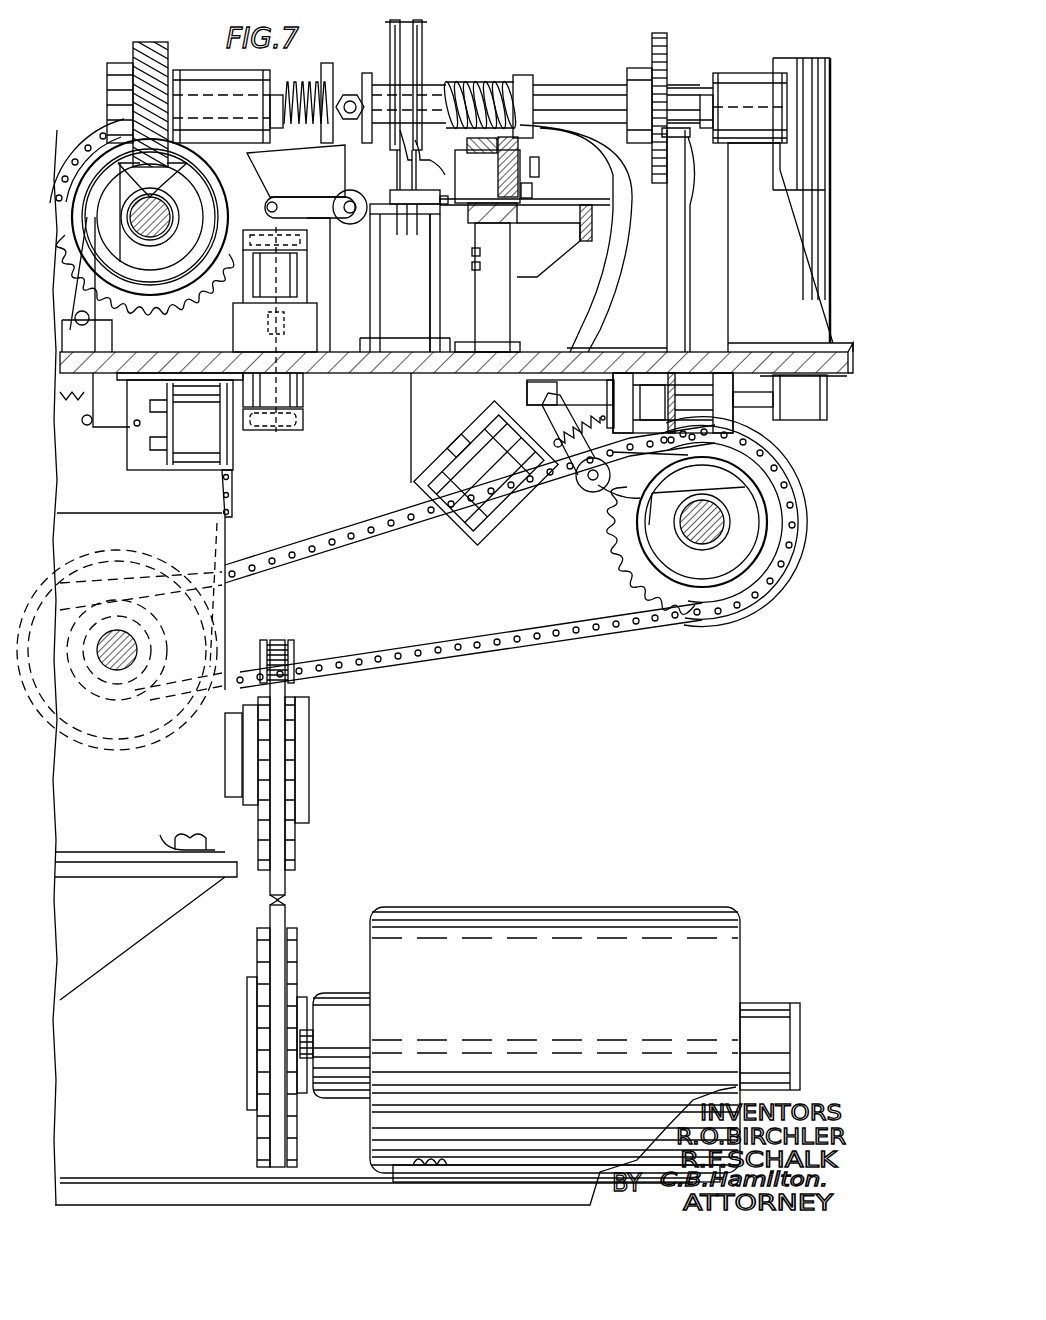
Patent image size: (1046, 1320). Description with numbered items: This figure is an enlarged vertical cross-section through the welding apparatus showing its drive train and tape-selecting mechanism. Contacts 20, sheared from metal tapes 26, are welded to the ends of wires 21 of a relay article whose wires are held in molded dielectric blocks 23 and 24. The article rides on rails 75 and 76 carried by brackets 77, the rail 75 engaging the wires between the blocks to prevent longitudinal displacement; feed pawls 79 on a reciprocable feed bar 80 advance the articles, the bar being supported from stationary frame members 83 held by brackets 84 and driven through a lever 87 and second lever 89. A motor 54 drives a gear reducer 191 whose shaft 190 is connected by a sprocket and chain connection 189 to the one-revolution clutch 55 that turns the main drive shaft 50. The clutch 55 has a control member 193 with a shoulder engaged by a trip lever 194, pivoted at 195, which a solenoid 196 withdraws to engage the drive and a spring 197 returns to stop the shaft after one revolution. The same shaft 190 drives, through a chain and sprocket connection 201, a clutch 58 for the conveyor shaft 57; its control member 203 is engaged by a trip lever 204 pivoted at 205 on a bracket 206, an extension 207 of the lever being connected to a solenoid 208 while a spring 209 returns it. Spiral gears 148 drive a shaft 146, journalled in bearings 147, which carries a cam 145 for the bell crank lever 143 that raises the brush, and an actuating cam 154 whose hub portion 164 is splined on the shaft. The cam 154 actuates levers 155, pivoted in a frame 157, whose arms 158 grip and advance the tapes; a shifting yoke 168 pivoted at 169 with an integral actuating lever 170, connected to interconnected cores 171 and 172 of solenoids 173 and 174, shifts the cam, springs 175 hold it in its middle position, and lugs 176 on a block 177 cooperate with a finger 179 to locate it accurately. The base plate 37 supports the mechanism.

The contacts 20 is at (443, 208).
The wires 21 is at (592, 193).
The molded block 23 is at (498, 185).
The molded block 24 is at (562, 208).
The tapes 26 is at (415, 228).
The base plate 37 is at (456, 370).
The main drive shaft 50 is at (170, 220).
The motor 54 is at (546, 925).
The one-revolution clutch 55 is at (103, 163).
The shaft 57 is at (702, 530).
The clutch 58 is at (764, 565).
The rail 75 is at (513, 216).
The rail 76 is at (592, 213).
The brackets 77 is at (498, 312).
The feed pawls 79 is at (532, 195).
The feed bar 80 is at (519, 162).
The stationary frame members 83 is at (497, 150).
The brackets 84 is at (653, 257).
The lever 87 is at (688, 103).
The second lever 89 is at (763, 410).
The bell crank lever 143 is at (733, 394).
The cam 145 is at (655, 57).
The shaft 146 is at (577, 100).
The bearings 147 is at (218, 88).
The spiral gears 148 is at (133, 52).
The actuating cam 154 is at (410, 75).
The levers 155 is at (392, 28).
The frame 157 is at (432, 297).
The arms 158 is at (395, 192).
The hub portion 164 is at (378, 95).
The shifting yoke 168 is at (345, 157).
The pivot 169 is at (403, 225).
The actuating lever 170 is at (308, 205).
The core 171 is at (300, 262).
The core 172 is at (303, 389).
The solenoid 173 is at (300, 278).
The solenoid 174 is at (303, 400).
The springs 175 is at (303, 85).
The lugs 176 is at (430, 158).
The block 177 is at (415, 195).
The finger 179 is at (421, 110).
The sprocket and chain connection 189 is at (146, 203).
The shaft 190 is at (120, 660).
The gear reducer 191 is at (205, 822).
The control member 193 is at (103, 183).
The trip lever 194 is at (88, 272).
The pivot 195 is at (108, 330).
The solenoid 196 is at (192, 455).
The spring 197 is at (90, 425).
The chain and sprocket connection 201 is at (667, 618).
The control member 203 is at (722, 474).
The trip lever 204 is at (612, 507).
The pivot 205 is at (591, 478).
The bracket 206 is at (611, 383).
The extension 207 is at (572, 462).
The solenoid 208 is at (463, 497).
The spring 209 is at (597, 420).